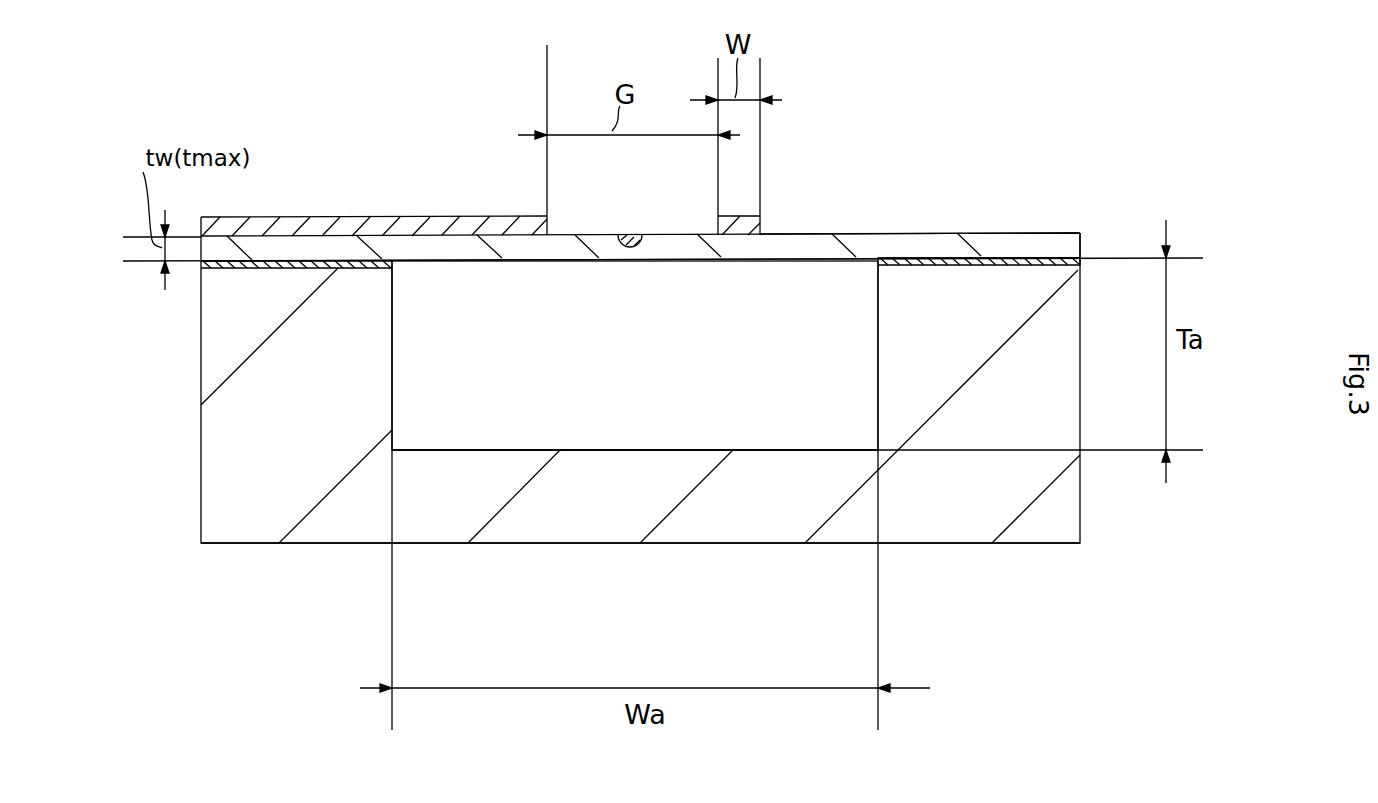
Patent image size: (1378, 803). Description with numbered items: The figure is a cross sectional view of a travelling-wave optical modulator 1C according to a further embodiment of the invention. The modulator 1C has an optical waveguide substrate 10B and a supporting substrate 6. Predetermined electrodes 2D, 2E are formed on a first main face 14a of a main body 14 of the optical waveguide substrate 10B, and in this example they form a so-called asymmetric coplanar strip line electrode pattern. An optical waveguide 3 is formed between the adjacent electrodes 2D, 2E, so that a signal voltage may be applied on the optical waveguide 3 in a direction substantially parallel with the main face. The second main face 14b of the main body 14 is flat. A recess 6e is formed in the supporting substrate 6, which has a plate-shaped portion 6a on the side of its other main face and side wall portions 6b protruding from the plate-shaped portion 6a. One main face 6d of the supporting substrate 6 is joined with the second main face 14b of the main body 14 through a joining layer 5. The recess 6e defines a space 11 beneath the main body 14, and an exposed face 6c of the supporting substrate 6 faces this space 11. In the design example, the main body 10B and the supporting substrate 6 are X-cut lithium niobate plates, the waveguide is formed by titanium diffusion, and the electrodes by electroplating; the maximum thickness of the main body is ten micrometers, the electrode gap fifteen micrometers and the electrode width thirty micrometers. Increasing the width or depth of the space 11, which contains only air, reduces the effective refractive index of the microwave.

The travelling-wave optical modulator 1C is at (1112, 228).
The electrode 2D is at (457, 215).
The electrode 2E is at (734, 220).
The optical waveguide 3 is at (630, 233).
The joining layer 5 is at (1076, 268).
The supporting substrate 6 is at (1084, 445).
The plate-shaped portion 6a is at (920, 528).
The side wall portions 6b is at (1063, 356).
The exposed face 6c is at (667, 438).
The main face of the substrate 6d is at (328, 263).
The recess 6e is at (797, 426).
The optical waveguide substrate 10B is at (975, 220).
The space 11 is at (635, 355).
The main body 14 is at (1063, 228).
The first main face 14a is at (813, 232).
The second main face 14b is at (695, 260).